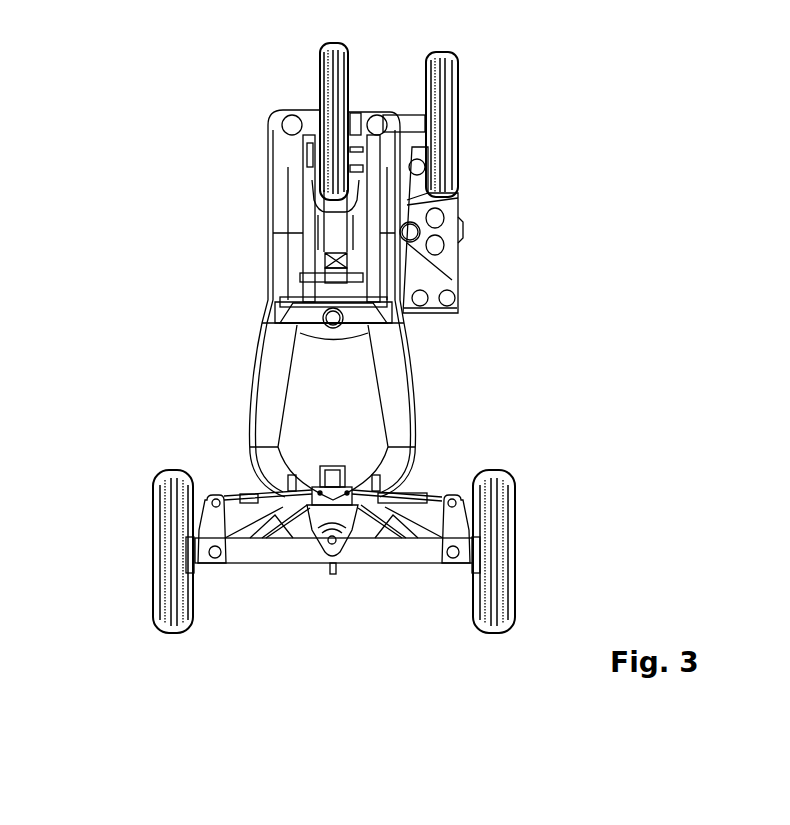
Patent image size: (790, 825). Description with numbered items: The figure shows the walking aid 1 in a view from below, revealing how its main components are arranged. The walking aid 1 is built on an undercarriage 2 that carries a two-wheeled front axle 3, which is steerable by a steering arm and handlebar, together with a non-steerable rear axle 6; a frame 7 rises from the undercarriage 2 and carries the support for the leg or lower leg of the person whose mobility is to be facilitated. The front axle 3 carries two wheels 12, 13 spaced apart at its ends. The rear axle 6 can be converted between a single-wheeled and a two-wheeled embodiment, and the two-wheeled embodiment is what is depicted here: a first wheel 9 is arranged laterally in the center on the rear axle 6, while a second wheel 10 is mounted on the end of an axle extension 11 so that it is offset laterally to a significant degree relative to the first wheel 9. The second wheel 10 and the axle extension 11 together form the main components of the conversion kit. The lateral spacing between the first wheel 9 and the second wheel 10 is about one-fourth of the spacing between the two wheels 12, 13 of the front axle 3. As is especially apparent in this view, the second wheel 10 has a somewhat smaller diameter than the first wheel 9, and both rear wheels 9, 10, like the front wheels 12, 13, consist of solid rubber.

The walking aid 1 is at (574, 290).
The undercarriage 2 is at (212, 478).
The front axle 3 is at (280, 552).
The rear axle 6 is at (365, 108).
The frame 7 is at (287, 352).
The first wheel 9 is at (328, 80).
The second wheel 10 is at (455, 110).
The axle extension 11 is at (403, 111).
The wheel 12 is at (167, 535).
The wheel 13 is at (507, 525).